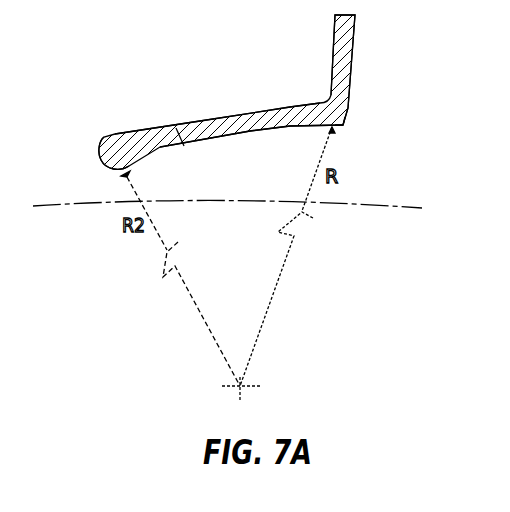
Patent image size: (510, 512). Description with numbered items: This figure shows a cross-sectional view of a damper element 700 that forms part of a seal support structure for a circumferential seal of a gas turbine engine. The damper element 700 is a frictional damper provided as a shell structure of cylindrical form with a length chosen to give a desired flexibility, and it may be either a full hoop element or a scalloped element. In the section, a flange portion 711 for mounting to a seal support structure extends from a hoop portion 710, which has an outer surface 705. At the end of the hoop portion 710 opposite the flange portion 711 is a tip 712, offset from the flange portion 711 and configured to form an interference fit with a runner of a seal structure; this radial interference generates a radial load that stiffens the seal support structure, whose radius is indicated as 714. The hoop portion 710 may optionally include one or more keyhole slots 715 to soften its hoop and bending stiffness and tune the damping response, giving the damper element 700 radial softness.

The damper element 700 is at (108, 83).
The outer surface 705 is at (240, 113).
The hoop portion 710 is at (258, 132).
The flange portion 711 is at (355, 41).
The tip 712 is at (108, 163).
The radius 714 is at (340, 128).
The keyhole slots 715 is at (193, 183).